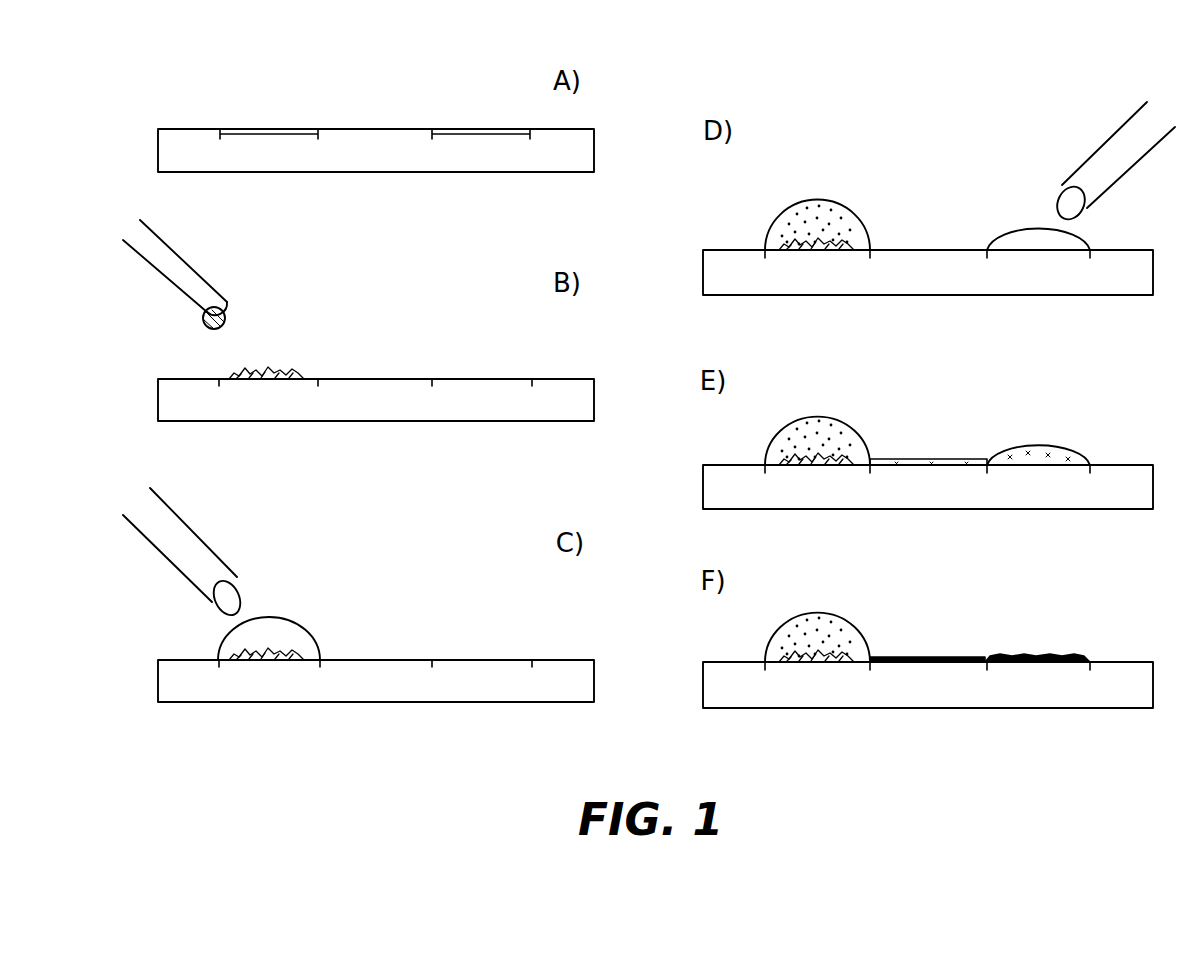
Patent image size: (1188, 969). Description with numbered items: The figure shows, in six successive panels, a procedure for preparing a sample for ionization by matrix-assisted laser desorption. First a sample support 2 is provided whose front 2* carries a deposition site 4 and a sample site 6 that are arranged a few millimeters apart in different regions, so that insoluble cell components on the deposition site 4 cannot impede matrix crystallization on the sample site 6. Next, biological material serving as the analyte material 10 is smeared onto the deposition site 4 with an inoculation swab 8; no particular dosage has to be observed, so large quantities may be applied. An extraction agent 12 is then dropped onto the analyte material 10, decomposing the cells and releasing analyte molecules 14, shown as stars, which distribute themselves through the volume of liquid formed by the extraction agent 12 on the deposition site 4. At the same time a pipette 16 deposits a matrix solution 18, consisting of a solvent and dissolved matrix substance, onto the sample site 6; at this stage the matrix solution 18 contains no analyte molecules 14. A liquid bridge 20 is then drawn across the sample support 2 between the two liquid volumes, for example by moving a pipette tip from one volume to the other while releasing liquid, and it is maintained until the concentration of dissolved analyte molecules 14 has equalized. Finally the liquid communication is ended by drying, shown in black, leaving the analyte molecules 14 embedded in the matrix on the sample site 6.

The sample support 2 is at (166, 120).
The deposition site 4 is at (544, 402).
The sample site 6 is at (761, 401).
The inoculation swab 8 is at (175, 274).
The analyte material 10 is at (226, 318).
The extraction agent 12 is at (285, 630).
The analyte molecules 14 is at (848, 212).
The pipette 16 is at (1113, 163).
The matrix solution 18 is at (1010, 232).
The liquid bridge 20 is at (943, 458).